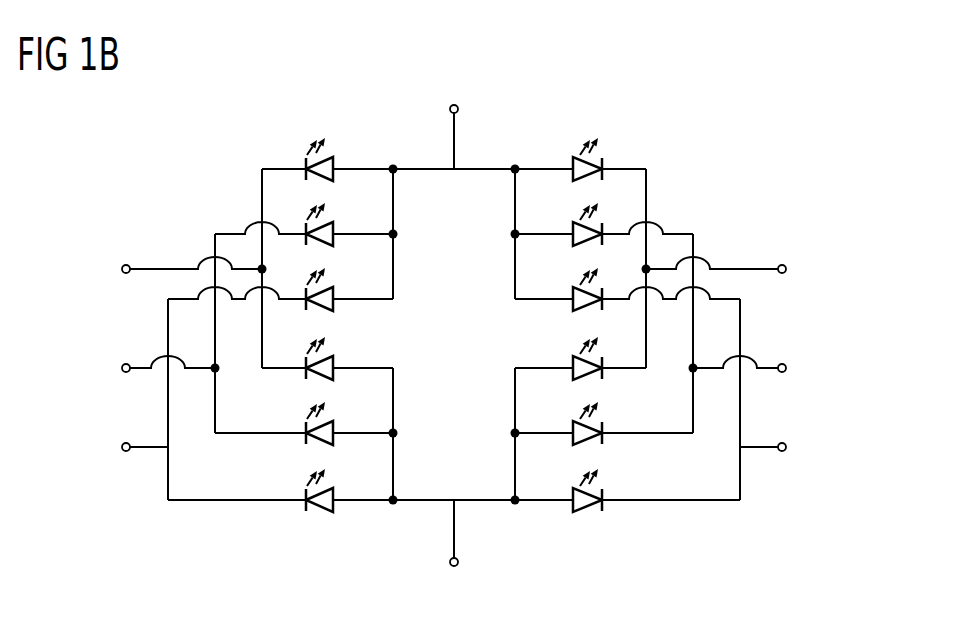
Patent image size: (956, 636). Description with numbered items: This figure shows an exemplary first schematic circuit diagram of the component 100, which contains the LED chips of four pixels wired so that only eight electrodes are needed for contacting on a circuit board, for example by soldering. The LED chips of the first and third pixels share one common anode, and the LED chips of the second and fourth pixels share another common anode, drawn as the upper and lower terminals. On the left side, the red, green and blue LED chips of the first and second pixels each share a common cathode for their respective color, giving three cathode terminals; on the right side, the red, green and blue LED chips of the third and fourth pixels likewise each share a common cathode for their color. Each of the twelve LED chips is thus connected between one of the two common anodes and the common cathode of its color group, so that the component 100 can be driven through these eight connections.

The component 100 is at (706, 82).